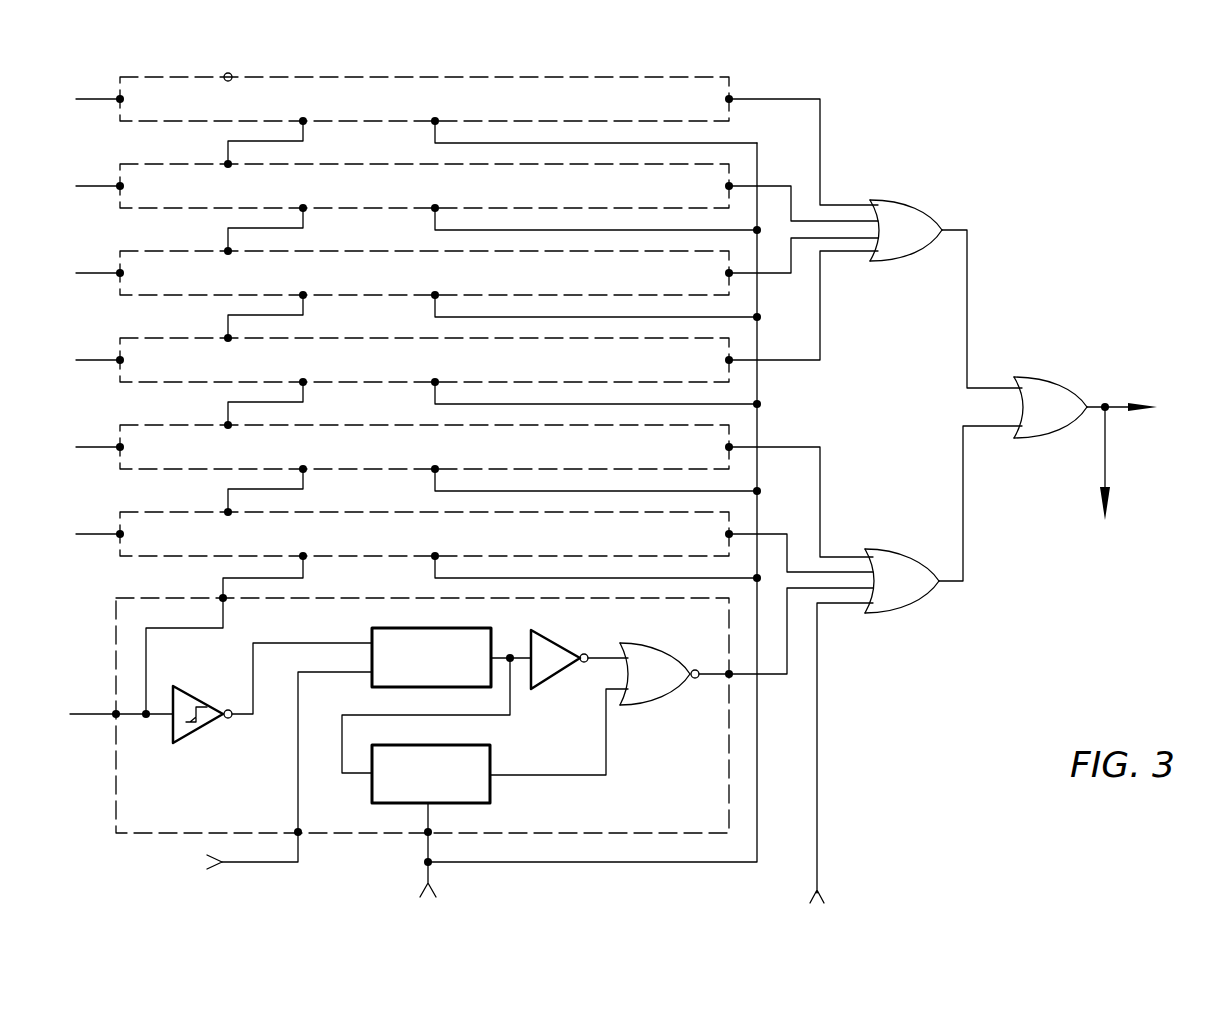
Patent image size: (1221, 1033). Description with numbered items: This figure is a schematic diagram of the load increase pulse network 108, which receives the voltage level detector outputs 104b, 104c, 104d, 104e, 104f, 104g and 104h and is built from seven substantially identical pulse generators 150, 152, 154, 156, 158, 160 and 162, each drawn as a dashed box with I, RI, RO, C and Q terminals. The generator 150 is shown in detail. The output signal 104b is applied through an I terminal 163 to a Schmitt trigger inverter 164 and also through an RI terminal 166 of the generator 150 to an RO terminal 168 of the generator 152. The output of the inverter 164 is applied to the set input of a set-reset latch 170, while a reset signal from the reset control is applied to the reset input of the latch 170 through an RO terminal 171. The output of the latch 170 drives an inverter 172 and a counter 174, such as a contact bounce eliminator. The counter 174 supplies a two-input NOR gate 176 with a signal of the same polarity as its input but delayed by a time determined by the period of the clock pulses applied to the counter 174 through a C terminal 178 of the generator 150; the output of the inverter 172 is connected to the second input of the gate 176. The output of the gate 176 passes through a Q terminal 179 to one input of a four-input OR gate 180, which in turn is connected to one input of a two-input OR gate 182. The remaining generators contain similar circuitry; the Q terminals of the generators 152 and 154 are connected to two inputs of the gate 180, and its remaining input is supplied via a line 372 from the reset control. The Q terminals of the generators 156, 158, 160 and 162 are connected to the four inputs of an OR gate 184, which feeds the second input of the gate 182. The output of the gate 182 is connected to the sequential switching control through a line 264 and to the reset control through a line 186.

The output 104h is at (110, 97).
The output 104g is at (110, 184).
The output 104f is at (110, 271).
The output 104e is at (110, 358).
The output 104d is at (110, 445).
The output 104c is at (110, 532).
The output signal 104b is at (108, 709).
The pulse generator 162 is at (731, 78).
The pulse generator 160 is at (731, 164).
The pulse generator 158 is at (731, 295).
The pulse generator 156 is at (731, 341).
The pulse generator 154 is at (731, 430).
The pulse generator 152 is at (731, 518).
The pulse generator 150 is at (729, 795).
The I terminal 163 is at (118, 716).
The Schmitt trigger inverter 164 is at (228, 719).
The RI terminal 166 is at (223, 598).
The RO terminal 168 is at (303, 557).
The set-reset latch 170 is at (372, 633).
The RO terminal 171 is at (298, 832).
The inverter 172 is at (553, 638).
The counter 174 is at (490, 750).
The two-input NOR gate 176 is at (660, 706).
The C terminal 178 is at (428, 833).
The Q terminal 179 is at (729, 674).
The four-input OR gate 180 is at (922, 613).
The two-input OR gate 182 is at (1053, 380).
The OR gate 184 is at (930, 205).
The line 186 is at (1105, 475).
The line 264 is at (1118, 400).
The load increase pulse network 108 is at (1138, 233).
The line 372 is at (817, 735).